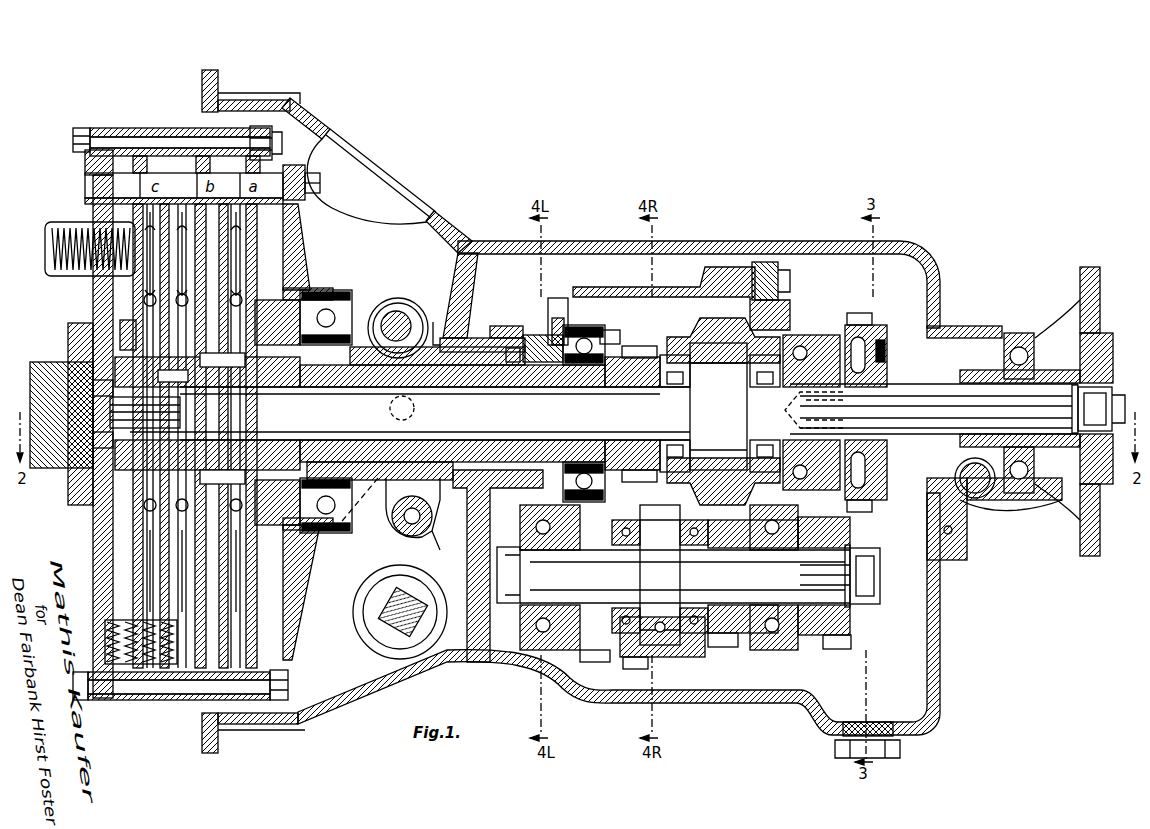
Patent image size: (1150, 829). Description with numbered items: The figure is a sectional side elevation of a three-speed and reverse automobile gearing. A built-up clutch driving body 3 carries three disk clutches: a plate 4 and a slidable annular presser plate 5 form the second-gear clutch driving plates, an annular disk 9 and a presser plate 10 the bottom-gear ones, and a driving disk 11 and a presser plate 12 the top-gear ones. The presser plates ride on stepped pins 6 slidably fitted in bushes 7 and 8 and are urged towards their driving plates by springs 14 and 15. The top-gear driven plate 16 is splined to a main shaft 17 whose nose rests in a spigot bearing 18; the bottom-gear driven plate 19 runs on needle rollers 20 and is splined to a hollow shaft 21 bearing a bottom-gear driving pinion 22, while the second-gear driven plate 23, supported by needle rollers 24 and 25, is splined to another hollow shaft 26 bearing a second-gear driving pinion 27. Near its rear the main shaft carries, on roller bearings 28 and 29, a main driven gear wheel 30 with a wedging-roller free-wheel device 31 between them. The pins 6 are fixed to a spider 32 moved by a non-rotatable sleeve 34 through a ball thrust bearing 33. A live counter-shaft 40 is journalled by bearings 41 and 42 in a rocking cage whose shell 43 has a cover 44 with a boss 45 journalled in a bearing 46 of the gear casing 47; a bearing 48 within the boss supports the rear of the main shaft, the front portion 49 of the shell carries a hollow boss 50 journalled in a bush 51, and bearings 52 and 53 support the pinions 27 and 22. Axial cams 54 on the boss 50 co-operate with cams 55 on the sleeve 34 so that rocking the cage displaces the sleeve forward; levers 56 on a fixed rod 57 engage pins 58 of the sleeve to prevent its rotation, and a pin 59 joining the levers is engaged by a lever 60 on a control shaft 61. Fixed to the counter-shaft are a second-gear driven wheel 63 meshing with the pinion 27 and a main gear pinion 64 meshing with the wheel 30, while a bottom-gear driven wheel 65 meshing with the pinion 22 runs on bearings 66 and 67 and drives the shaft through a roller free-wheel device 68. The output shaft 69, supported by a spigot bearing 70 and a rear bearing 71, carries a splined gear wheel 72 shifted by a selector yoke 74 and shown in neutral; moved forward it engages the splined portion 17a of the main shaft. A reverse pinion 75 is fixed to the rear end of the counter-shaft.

The clutch driving body 3 is at (92, 131).
The plate 4 is at (247, 128).
The annular presser plate 5 is at (238, 238).
The stepped pins 6 is at (284, 174).
The bush 7 is at (262, 204).
The bush 8 is at (86, 162).
The annular disk 9 is at (204, 156).
The presser plate 10 is at (180, 150).
The driving disk 11 is at (156, 138).
The presser plate 12 is at (128, 130).
The springs 14 is at (143, 680).
The springs 15 is at (62, 224).
The top-gear driven plate 16 is at (140, 310).
The main shaft 17 is at (447, 413).
The splined portion 17a is at (832, 476).
The spigot bearing 18 is at (56, 368).
The bottom-gear driven plate 19 is at (150, 302).
The needle rollers 20 is at (180, 399).
The hollow shaft 21 is at (275, 390).
The bottom-gear driving pinion 22 is at (638, 347).
The second-gear driven plate 23 is at (250, 284).
The needle rollers 24 is at (284, 297).
The needle rollers 25 is at (222, 372).
The hollow shaft 26 is at (352, 366).
The second-gear driving pinion 27 is at (613, 330).
The roller bearing 28 is at (674, 388).
The roller bearing 29 is at (762, 388).
The main driven gear wheel 30 is at (698, 332).
The free-wheel device 31 is at (712, 357).
The spider 32 is at (298, 228).
The ball thrust bearing 33 is at (352, 316).
The non-rotatable sleeve 34 is at (431, 323).
The counter-shaft 40 is at (860, 604).
The bearing 41 is at (528, 622).
The bearing 42 is at (770, 632).
The shell 43 is at (598, 289).
The cover 44 is at (752, 266).
The boss 45 is at (822, 346).
The bearing 46 is at (816, 494).
The gear casing 47 is at (803, 252).
The bearing 48 is at (812, 356).
The front portion 49 is at (525, 514).
The hollow boss 50 is at (530, 338).
The bush 51 is at (495, 334).
The bearing 52 is at (558, 300).
The bearing 53 is at (588, 334).
The axial cams 54 is at (462, 438).
The cams 55 is at (510, 364).
The levers 56 is at (403, 300).
The fixed rod 57 is at (392, 314).
The pins 58 is at (389, 408).
The pin 59 is at (392, 517).
The lever 60 is at (415, 556).
The control shaft 61 is at (385, 617).
The second-gear driven wheel 63 is at (590, 660).
The main gear pinion 64 is at (728, 618).
The bottom-gear driven wheel 65 is at (625, 680).
The bearing 66 is at (625, 600).
The bearing 67 is at (690, 600).
The roller free-wheel device 68 is at (655, 525).
The output shaft 69 is at (1055, 440).
The spigot bearing 70 is at (825, 459).
The rear bearing 71 is at (1020, 333).
The splined gear wheel 72 is at (858, 315).
The selector yoke 74 is at (881, 342).
The reverse pinion 75 is at (840, 636).